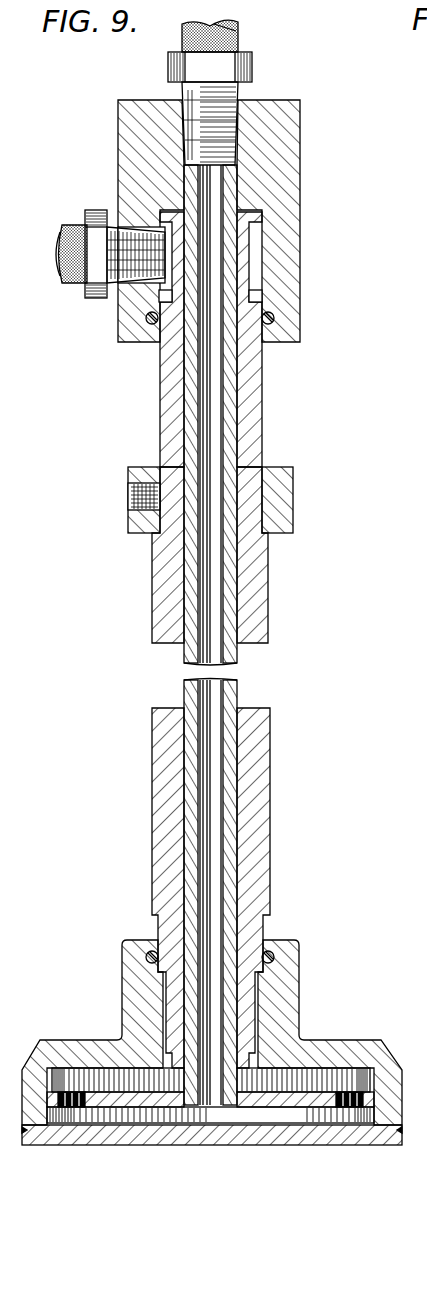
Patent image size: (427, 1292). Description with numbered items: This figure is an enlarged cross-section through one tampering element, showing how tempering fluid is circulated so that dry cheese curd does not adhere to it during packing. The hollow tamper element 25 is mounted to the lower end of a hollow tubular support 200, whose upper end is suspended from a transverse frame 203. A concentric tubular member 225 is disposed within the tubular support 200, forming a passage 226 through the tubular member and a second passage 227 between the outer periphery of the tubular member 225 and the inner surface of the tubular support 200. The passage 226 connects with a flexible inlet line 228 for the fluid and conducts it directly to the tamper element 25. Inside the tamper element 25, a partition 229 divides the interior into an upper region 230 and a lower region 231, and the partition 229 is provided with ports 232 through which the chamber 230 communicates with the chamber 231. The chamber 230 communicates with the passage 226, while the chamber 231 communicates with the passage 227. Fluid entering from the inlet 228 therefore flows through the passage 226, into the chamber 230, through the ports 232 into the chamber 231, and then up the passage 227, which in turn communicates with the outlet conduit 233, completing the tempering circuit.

The transverse frame 203 is at (287, 174).
The flexible inlet line 228 is at (238, 32).
The outlet conduit 233 is at (70, 227).
The concentric tubular member 225 is at (233, 393).
The passage 226 is at (212, 478).
The tubular support 200 is at (263, 414).
The passage 227 is at (237, 568).
The tamper element 25 is at (393, 1053).
The lower region 231 is at (288, 1080).
The partition 229 is at (308, 1097).
The ports 232 is at (73, 1117).
The upper region 230 is at (228, 1117).